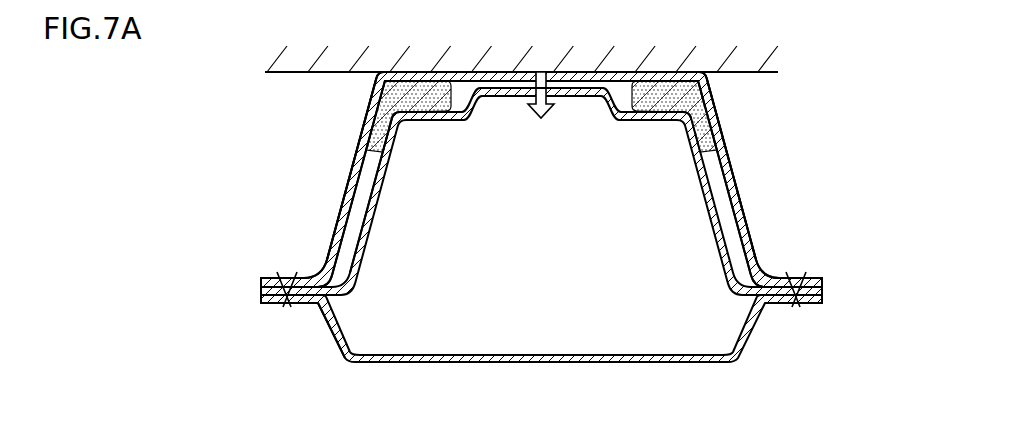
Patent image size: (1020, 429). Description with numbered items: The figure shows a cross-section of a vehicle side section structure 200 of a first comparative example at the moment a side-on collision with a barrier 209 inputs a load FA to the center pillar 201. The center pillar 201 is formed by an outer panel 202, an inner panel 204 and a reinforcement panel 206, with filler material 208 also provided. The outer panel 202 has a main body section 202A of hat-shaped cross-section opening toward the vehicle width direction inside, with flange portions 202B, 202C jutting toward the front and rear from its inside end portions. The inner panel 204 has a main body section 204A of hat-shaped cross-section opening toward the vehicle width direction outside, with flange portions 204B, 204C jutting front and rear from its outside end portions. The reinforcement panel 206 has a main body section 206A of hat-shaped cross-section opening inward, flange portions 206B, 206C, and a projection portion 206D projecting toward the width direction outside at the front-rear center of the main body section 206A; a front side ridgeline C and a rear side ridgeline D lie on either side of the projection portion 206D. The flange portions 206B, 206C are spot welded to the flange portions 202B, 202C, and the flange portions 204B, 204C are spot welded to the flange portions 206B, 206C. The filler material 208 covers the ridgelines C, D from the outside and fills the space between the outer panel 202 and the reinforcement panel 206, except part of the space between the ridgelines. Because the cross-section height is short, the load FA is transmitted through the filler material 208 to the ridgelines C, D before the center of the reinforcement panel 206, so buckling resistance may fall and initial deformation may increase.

The vehicle side section structure 200 is at (777, 157).
The center pillar 201 is at (729, 152).
The outer panel 202 is at (743, 200).
The main body section 202A is at (355, 138).
The flange portion 202B is at (273, 275).
The flange portion 202C is at (813, 273).
The inner panel 204 is at (739, 360).
The main body section 204A is at (346, 358).
The flange portion 204B is at (270, 305).
The flange portion 204C is at (814, 305).
The reinforcement panel 206 is at (712, 238).
The main body section 206A is at (372, 238).
The flange portion 206B is at (258, 288).
The flange portion 206C is at (824, 288).
The projection portion 206D is at (517, 99).
The filler material 208 is at (462, 90).
The barrier 209 is at (766, 72).
The front side ridgeline C is at (410, 122).
The rear side ridgeline D is at (671, 122).
The load FA is at (566, 80).